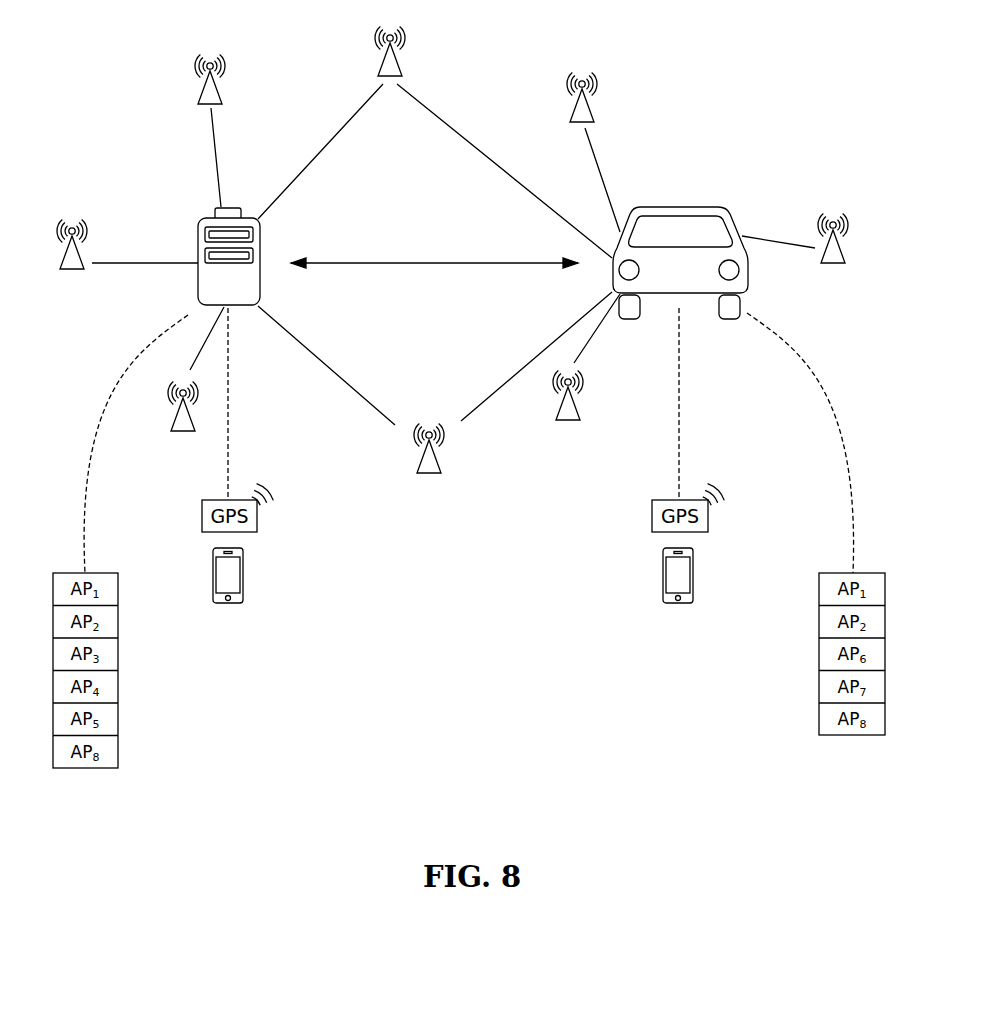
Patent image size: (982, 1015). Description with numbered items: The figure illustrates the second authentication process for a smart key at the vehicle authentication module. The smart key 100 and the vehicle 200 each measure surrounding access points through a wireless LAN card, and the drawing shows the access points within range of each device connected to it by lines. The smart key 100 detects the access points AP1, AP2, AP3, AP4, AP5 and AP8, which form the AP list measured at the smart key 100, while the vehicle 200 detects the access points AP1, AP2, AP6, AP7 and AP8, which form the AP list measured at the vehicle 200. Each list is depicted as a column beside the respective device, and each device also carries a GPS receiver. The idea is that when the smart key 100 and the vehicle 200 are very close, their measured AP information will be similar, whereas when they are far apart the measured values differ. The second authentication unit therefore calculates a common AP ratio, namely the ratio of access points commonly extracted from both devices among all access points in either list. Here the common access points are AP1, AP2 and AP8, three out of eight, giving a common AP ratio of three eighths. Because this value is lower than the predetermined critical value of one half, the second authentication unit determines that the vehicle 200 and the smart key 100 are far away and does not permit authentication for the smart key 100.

The smart key 100 is at (233, 208).
The vehicle 200 is at (680, 204).
The access point AP1 is at (390, 41).
The access point AP2 is at (429, 465).
The access point AP3 is at (210, 69).
The access point AP4 is at (72, 234).
The access point AP5 is at (183, 423).
The access point AP6 is at (582, 87).
The access point AP7 is at (833, 228).
The access point AP8 is at (568, 411).